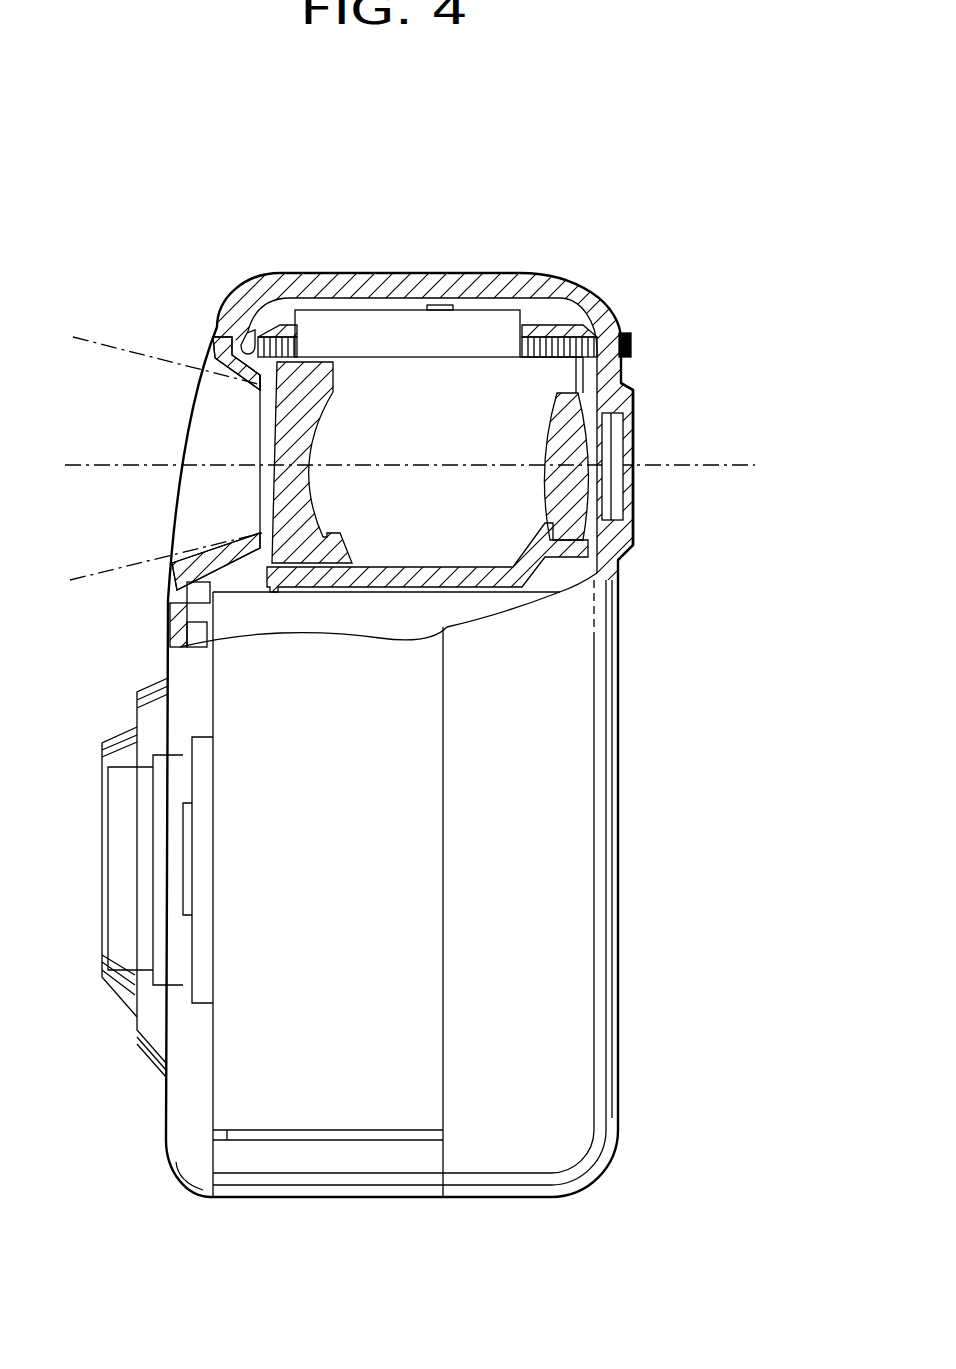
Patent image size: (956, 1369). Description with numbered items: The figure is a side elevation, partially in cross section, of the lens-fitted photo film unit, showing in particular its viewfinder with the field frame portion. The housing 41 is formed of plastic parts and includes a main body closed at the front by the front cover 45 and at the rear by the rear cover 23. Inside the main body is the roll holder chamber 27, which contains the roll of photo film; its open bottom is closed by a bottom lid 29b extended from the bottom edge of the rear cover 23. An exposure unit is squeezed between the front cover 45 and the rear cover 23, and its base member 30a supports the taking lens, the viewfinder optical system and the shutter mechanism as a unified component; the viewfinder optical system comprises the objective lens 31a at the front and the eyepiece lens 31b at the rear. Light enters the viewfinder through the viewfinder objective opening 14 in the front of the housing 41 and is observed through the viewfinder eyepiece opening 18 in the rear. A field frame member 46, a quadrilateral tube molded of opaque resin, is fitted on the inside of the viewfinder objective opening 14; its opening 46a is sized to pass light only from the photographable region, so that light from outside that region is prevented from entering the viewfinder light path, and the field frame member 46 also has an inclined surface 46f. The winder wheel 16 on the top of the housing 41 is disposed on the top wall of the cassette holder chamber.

The viewfinder objective opening 14 is at (263, 292).
The winder wheel 16 is at (632, 343).
The viewfinder eyepiece opening 18 is at (633, 447).
The rear cover 23 is at (597, 266).
The roll holder chamber 27 is at (370, 885).
The bottom lid 29b is at (320, 1178).
The base member 30a is at (430, 566).
The objective lens 31a is at (335, 381).
The eyepiece lens 31b is at (557, 395).
The housing 41 is at (524, 205).
The front cover 45 is at (373, 250).
The field frame member 46 is at (182, 330).
The opening 46a is at (260, 383).
The inclined surface 46f is at (210, 548).